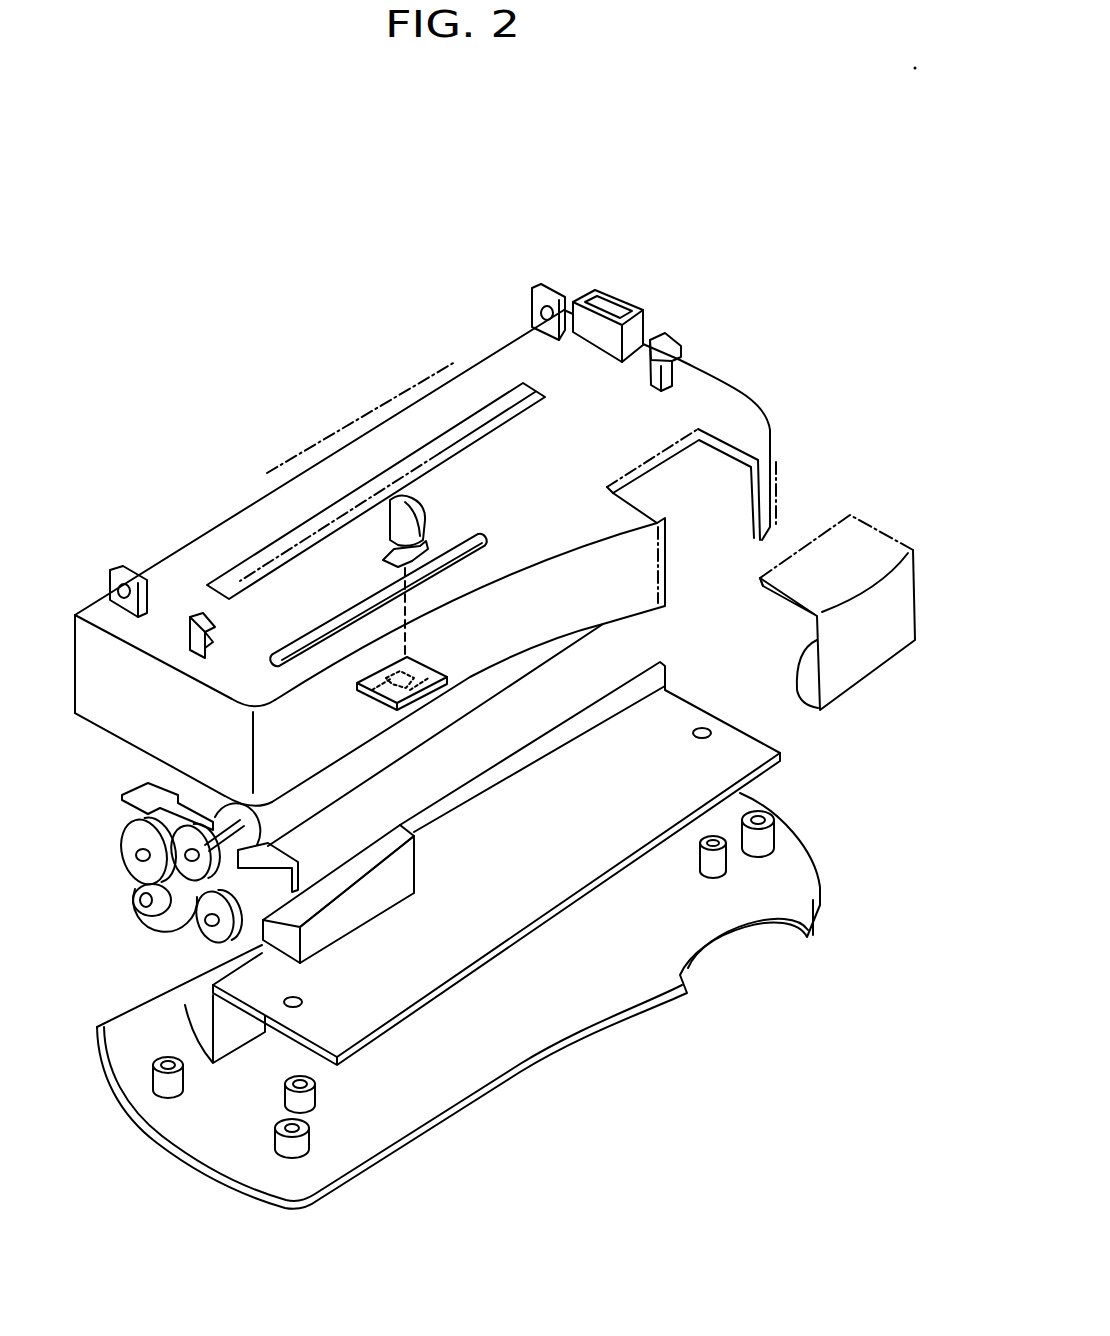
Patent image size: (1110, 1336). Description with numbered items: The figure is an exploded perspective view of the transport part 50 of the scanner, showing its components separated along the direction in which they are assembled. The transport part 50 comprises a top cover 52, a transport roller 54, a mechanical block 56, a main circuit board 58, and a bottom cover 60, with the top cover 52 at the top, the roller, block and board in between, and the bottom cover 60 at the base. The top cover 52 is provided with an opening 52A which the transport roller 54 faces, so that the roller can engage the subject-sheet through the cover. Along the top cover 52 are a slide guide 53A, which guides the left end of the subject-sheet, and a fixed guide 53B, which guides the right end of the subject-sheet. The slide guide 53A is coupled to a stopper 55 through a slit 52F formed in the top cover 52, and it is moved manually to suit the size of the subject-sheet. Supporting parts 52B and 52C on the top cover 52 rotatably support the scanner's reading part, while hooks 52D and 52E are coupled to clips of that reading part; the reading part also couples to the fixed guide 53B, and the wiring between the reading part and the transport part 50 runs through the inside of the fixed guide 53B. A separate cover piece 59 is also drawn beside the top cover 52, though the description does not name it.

The transport part 50 is at (717, 262).
The top cover 52 is at (438, 408).
The opening 52A is at (393, 480).
The supporting part 52B is at (137, 575).
The supporting part 52C is at (560, 296).
The hook 52D is at (190, 650).
The hook 52E is at (678, 347).
The slit 52F is at (322, 623).
The slide guide 53A is at (418, 508).
The fixed guide 53B is at (580, 292).
The transport roller 54 is at (443, 716).
The stopper 55 is at (430, 648).
The mechanical block 56 is at (139, 945).
The main circuit board 58 is at (456, 953).
The cover 59 is at (872, 658).
The bottom cover 60 is at (635, 1005).